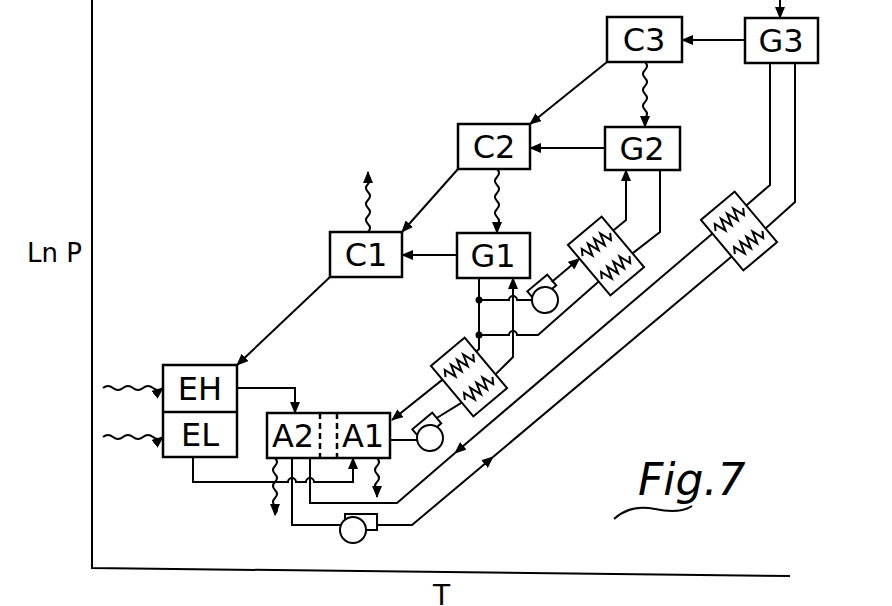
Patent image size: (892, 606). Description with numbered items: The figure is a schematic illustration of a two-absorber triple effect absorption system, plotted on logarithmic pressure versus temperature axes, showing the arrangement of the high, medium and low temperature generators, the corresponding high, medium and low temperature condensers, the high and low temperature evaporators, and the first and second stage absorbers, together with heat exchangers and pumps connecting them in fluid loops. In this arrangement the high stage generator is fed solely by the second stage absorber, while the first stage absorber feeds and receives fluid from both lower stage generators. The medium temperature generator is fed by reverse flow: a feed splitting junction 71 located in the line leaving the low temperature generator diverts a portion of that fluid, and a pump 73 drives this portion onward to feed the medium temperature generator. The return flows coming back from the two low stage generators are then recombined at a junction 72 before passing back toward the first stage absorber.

The feed splitting junction 71 is at (477, 300).
The junction 72 is at (477, 335).
The pump 73 is at (554, 311).